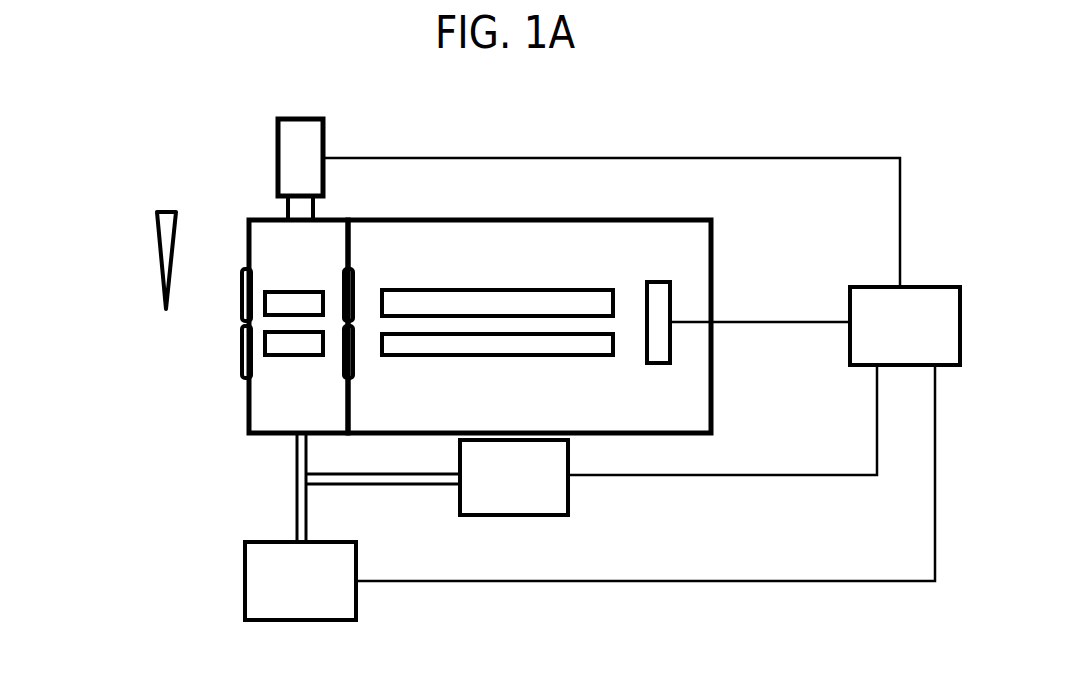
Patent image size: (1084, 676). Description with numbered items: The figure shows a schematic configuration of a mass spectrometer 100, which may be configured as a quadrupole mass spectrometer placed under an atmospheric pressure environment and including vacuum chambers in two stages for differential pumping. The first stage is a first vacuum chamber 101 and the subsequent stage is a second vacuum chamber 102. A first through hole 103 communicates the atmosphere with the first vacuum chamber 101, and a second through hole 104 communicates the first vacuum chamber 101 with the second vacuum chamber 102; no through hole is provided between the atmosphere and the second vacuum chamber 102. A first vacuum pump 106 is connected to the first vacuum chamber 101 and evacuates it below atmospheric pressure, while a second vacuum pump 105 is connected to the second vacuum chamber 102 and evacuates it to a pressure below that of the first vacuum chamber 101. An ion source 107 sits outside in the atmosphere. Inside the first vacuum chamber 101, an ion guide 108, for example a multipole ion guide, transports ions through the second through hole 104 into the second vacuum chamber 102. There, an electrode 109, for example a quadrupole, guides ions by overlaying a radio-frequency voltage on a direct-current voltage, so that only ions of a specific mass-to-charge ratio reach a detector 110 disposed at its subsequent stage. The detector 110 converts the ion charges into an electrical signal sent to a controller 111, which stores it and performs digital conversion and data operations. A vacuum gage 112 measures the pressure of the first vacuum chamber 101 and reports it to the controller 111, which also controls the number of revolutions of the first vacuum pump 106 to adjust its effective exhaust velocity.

The mass spectrometer 100 is at (705, 140).
The first vacuum chamber 101 is at (298, 326).
The second vacuum chamber 102 is at (529, 326).
The first through hole 103 is at (240, 357).
The second through hole 104 is at (356, 373).
The second vacuum pump 105 is at (437, 477).
The first vacuum pump 106 is at (300, 527).
The ion source 107 is at (155, 230).
The ion guide 108 is at (295, 347).
The electrode 109 is at (525, 343).
The detector 110 is at (658, 343).
The controller 111 is at (905, 326).
The vacuum gage 112 is at (290, 167).